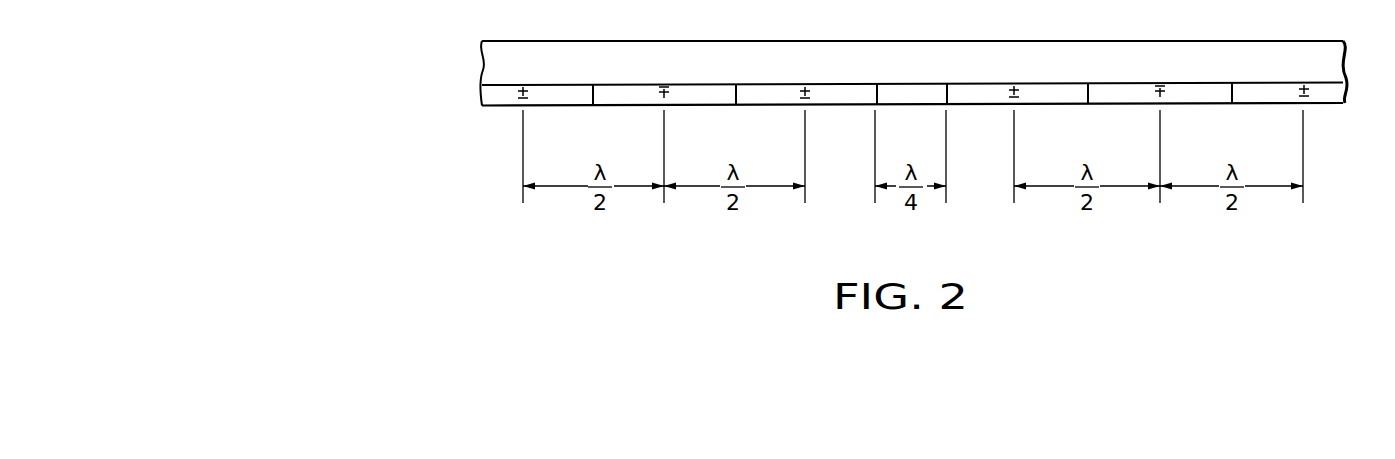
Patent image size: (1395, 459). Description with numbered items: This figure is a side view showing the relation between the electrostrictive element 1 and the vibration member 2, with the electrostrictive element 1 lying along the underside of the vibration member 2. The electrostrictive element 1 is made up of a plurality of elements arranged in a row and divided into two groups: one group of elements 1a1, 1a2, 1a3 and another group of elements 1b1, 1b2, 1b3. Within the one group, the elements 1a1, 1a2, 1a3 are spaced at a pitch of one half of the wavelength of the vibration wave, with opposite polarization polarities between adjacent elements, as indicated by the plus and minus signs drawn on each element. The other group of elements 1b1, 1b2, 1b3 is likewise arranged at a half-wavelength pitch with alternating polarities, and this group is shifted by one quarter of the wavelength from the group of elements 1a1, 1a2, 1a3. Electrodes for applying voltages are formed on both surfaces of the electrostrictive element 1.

The electrostrictive element 1 is at (470, 99).
The vibration member 2 is at (497, 61).
The element 1a1 is at (844, 95).
The element 1a2 is at (691, 95).
The element 1a3 is at (549, 96).
The element 1b1 is at (1043, 93).
The element 1b2 is at (1192, 93).
The element 1b3 is at (1328, 91).